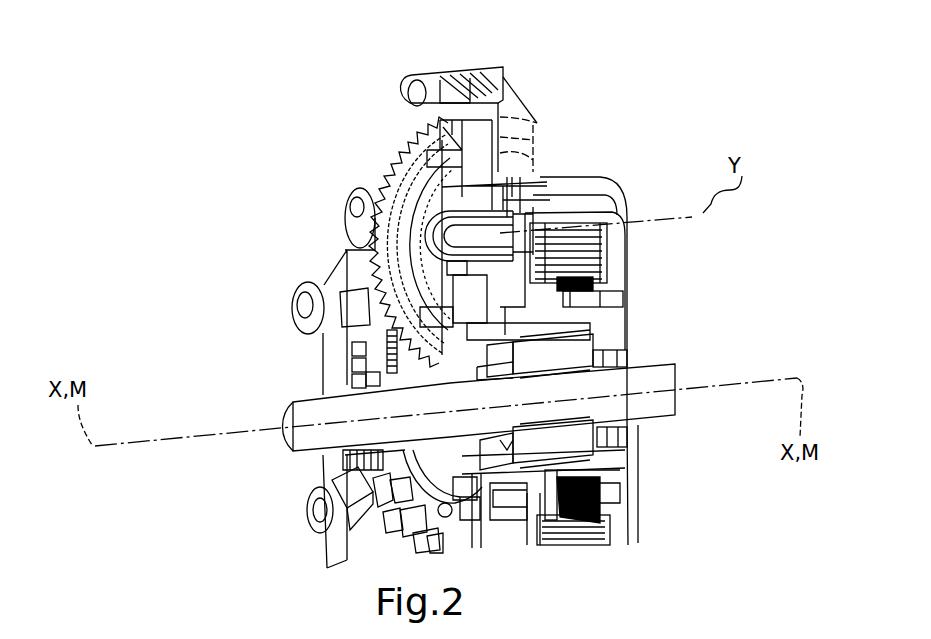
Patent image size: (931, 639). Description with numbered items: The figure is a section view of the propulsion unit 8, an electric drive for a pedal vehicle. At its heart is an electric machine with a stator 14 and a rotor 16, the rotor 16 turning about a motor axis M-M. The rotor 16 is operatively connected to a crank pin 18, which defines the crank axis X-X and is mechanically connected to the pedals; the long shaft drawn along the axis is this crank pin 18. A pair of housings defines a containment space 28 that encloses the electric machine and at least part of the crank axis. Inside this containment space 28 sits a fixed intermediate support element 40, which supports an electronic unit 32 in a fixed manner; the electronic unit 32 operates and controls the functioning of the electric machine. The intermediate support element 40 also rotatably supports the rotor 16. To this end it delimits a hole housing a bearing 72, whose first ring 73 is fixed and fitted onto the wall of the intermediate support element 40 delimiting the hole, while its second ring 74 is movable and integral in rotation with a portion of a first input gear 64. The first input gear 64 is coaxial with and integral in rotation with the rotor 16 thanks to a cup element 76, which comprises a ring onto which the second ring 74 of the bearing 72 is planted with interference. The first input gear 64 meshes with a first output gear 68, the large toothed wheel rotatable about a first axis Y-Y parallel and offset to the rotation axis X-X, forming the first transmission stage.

The propulsion unit 8 is at (660, 79).
The stator 14 is at (593, 287).
The rotor 16 is at (563, 215).
The crank pin 18 is at (288, 447).
The containment space 28 is at (518, 203).
The electronic unit 32 is at (336, 541).
The intermediate support element 40 is at (492, 207).
The first input gear 64 is at (388, 371).
The first output gear 68 is at (400, 168).
The bearing 72 is at (436, 312).
The first ring 73 is at (425, 300).
The second ring 74 is at (325, 322).
The cup element 76 is at (603, 493).